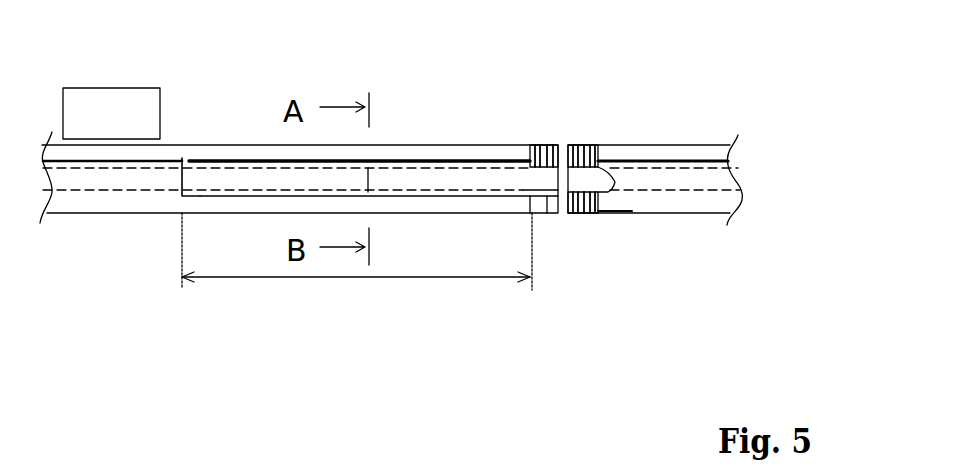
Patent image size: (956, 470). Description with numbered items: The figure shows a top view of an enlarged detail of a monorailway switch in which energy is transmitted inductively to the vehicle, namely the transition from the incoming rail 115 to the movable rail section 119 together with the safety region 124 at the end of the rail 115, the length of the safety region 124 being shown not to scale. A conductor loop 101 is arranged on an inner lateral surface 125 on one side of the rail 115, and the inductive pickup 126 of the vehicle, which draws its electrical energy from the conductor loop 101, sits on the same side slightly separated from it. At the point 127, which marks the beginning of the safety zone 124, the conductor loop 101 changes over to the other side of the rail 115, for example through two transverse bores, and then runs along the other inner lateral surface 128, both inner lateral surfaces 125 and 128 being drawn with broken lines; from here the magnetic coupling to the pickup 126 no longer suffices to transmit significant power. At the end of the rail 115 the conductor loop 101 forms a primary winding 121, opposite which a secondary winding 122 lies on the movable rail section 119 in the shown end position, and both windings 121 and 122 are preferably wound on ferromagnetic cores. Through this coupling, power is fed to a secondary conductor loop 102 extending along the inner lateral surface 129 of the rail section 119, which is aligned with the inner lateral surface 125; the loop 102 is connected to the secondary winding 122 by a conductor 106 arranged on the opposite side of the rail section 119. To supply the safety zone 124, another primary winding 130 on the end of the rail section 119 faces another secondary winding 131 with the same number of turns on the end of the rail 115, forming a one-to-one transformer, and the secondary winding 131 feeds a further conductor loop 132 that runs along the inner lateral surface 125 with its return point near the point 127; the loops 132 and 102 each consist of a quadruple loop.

The conductor loop 101 is at (88, 157).
The secondary conductor loop 102 is at (655, 160).
The conductor 106 is at (627, 208).
The incoming rail 115 is at (463, 202).
The movable rail section 119 is at (693, 202).
The primary winding 121 is at (542, 213).
The secondary winding 122 is at (580, 213).
The safety region 124 is at (357, 277).
The inner lateral surface 125 is at (157, 160).
The inductive pickup 126 is at (105, 112).
The point 127 is at (212, 160).
The inner lateral surface 128 is at (77, 190).
The inner lateral surface 129 is at (702, 160).
The primary winding 130 is at (582, 145).
The secondary winding 131 is at (543, 145).
The conductor loop 132 is at (447, 160).